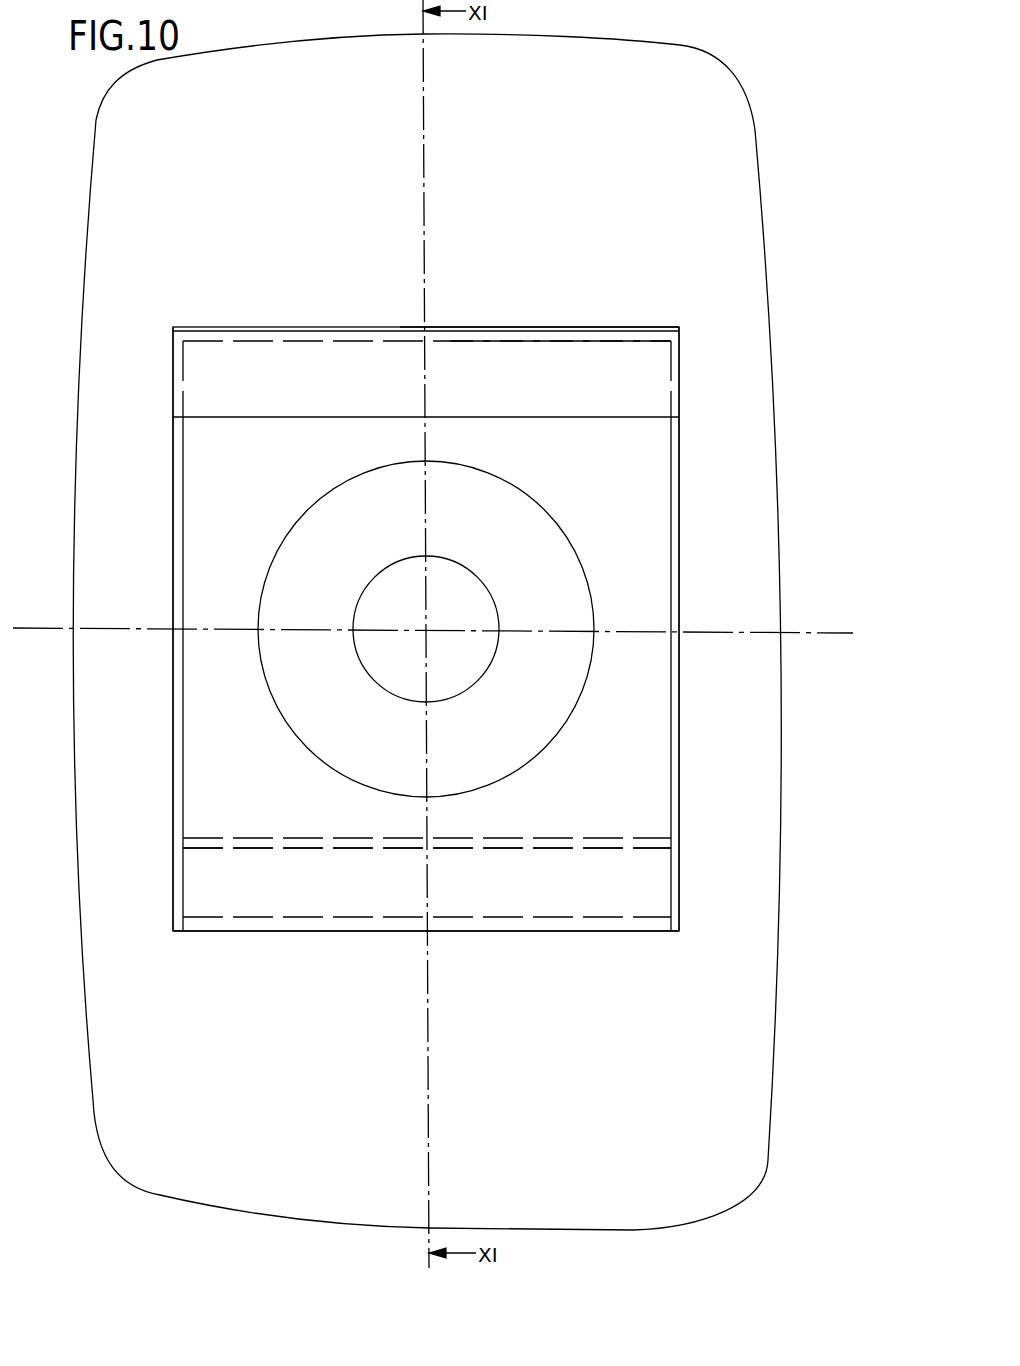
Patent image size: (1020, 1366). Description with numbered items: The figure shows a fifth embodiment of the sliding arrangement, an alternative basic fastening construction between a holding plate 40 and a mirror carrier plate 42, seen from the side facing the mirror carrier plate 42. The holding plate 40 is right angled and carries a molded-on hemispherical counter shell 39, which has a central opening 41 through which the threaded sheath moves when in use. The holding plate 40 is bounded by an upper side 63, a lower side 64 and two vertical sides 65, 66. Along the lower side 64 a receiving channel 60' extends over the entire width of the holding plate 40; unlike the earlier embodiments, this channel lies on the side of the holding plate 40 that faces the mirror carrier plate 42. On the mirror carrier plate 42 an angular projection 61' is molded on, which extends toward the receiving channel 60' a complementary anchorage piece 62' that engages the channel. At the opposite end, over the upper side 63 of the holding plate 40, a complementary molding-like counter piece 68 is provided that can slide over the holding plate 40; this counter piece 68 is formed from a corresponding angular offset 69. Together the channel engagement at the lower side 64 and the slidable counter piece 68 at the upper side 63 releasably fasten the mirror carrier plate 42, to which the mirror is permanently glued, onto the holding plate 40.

The mirror carrier plate 42 is at (732, 240).
The holding plate 40 is at (646, 500).
The counter shell 39 is at (517, 518).
The central opening 41 is at (472, 660).
The vertical side 65 is at (173, 551).
The vertical side 66 is at (675, 558).
The counter piece 68 is at (650, 378).
The angular offset 69 is at (516, 330).
The upper side 63 is at (575, 341).
The angular projection 61' is at (427, 821).
The anchorage piece 62' is at (465, 882).
The receiving channel 60' is at (427, 952).
The lower side 64 is at (618, 933).